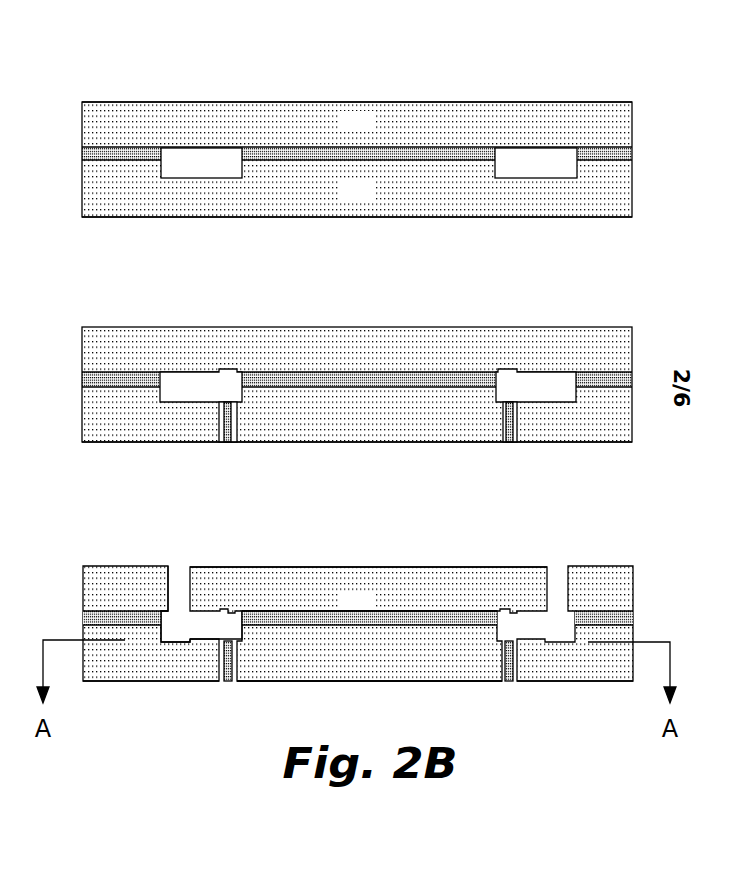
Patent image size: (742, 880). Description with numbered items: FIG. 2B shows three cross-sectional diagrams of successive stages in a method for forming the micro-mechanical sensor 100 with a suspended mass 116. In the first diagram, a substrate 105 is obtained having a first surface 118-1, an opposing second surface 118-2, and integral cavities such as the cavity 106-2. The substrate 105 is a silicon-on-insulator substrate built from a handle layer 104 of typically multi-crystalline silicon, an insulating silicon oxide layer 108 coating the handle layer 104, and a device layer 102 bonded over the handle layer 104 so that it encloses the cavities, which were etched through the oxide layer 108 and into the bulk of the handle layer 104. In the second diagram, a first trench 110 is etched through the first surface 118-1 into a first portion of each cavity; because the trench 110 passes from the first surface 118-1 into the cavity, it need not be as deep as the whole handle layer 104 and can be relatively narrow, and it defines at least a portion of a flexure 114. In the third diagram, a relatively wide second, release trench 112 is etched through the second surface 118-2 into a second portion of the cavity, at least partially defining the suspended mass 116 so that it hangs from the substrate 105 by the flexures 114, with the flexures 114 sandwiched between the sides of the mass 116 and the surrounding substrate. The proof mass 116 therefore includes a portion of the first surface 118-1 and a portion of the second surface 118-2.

The micro-mechanical sensor 100 is at (612, 555).
The device layer 102 is at (344, 131).
The handle layer 104 is at (344, 199).
The substrate 105 is at (649, 97).
The cavity 106-2 is at (532, 160).
The silicon oxide layer 108 is at (80, 156).
The first trench 110 is at (222, 438).
The second trench 112 is at (178, 576).
The first flexure 114 is at (232, 438).
The suspended mass 116 is at (345, 611).
The first surface 118-1 is at (440, 218).
The second surface 118-2 is at (443, 102).